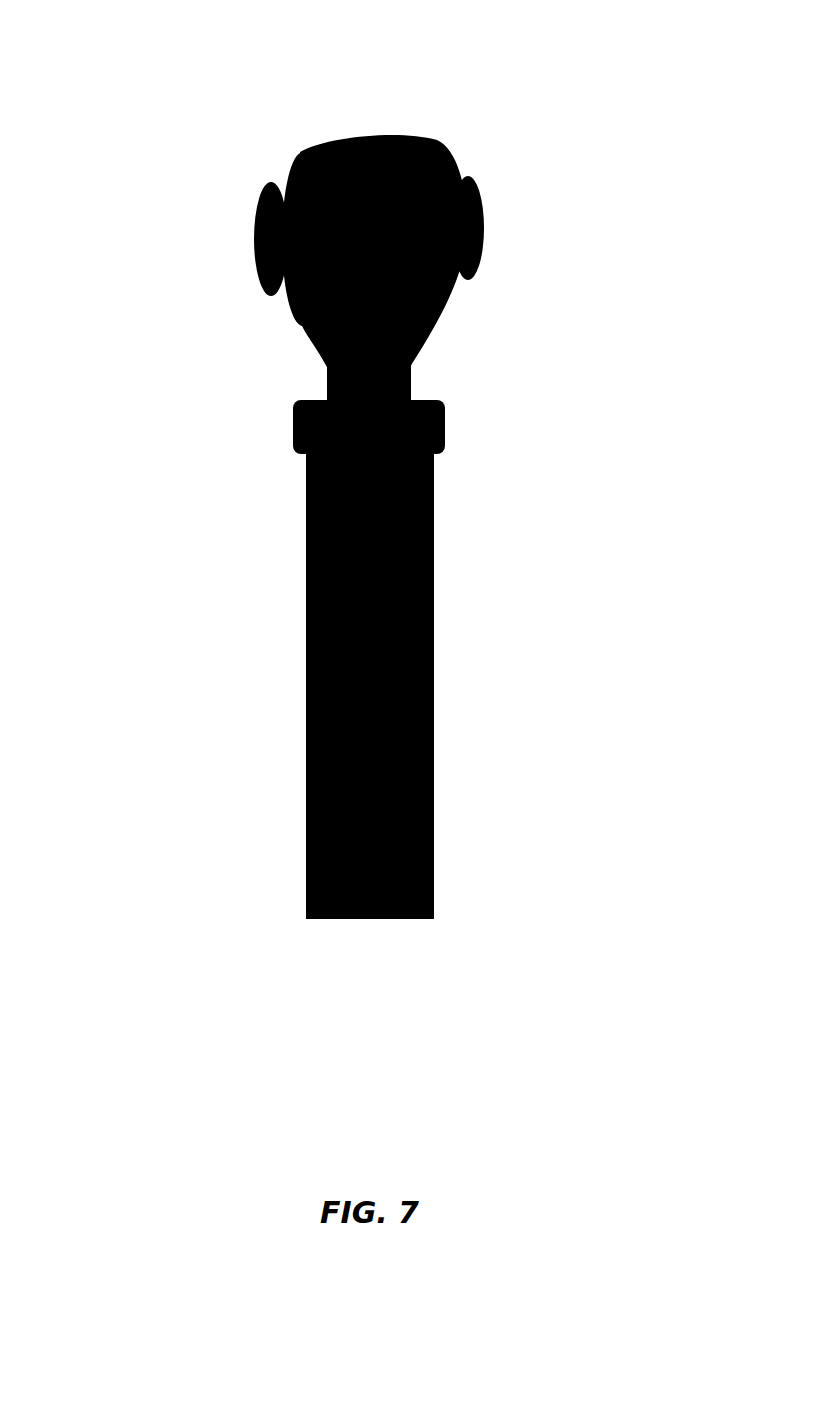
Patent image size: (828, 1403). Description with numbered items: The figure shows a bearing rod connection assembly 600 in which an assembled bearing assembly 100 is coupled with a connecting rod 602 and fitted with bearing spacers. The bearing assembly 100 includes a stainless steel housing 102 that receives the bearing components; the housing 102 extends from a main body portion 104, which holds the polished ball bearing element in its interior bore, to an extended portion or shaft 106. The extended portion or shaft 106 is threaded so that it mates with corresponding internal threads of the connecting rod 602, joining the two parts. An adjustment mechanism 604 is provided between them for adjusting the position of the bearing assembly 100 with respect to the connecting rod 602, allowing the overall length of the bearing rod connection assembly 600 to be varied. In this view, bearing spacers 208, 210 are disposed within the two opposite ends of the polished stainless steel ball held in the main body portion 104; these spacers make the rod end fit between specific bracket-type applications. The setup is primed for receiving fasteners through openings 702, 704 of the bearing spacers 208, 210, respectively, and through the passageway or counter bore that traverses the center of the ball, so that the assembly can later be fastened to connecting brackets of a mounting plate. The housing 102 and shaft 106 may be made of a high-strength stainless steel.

The bearing rod connection assembly 600 is at (345, 108).
The bearing assembly 100 is at (463, 162).
The main body portion 104 is at (428, 143).
The bearing spacer 208 is at (460, 233).
The opening 702 is at (470, 252).
The housing 102 is at (463, 265).
The extended portion or shaft 106 is at (410, 380).
The bearing spacer 210 is at (262, 194).
The opening 704 is at (258, 243).
The adjustment mechanism 604 is at (425, 436).
The connecting rod 602 is at (306, 660).